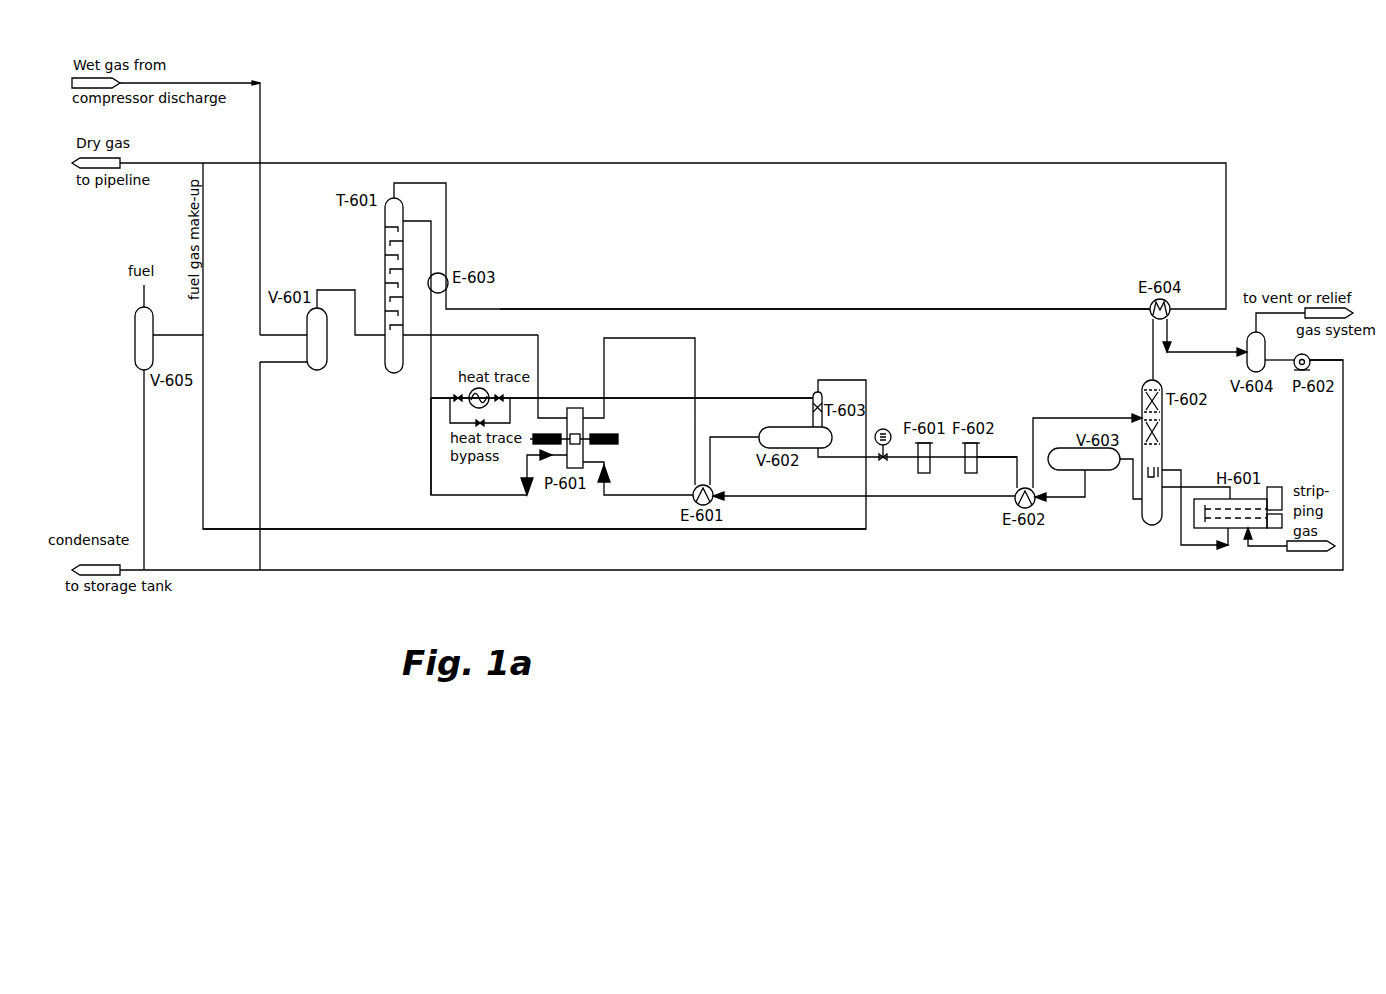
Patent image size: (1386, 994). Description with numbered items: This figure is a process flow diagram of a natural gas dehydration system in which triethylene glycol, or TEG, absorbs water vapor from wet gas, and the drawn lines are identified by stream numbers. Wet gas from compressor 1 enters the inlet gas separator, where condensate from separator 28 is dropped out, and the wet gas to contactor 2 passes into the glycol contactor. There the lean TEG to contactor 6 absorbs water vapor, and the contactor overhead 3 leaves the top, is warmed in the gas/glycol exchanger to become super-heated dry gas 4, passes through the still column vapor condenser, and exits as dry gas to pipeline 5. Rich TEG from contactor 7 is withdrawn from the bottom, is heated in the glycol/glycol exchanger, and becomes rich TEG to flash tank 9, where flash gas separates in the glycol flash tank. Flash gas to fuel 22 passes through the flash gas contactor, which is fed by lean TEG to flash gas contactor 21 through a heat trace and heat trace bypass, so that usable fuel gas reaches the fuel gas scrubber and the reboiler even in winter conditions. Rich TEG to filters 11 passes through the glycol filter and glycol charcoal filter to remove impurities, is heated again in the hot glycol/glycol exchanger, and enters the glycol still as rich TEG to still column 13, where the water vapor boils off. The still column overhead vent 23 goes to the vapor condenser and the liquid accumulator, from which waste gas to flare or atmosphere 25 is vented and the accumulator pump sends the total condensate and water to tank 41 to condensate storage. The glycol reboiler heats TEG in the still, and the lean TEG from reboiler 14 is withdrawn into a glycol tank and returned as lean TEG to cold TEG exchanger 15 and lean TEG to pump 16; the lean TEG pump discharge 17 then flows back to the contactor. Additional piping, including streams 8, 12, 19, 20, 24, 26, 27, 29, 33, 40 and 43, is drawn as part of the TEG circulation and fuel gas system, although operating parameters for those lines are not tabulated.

The wet gas from compressor 1 is at (260, 237).
The wet gas to contactor 2 is at (337, 290).
The contactor overhead 3 is at (446, 212).
The super-heated dry gas 4 is at (512, 308).
The dry gas to pipeline 5 is at (193, 162).
The lean TEG to contactor 6 is at (419, 221).
The rich TEG from contactor 7 is at (510, 329).
The pump discharge line 8 is at (657, 338).
The rich TEG to flash tank 9 is at (710, 467).
The rich TEG to filters 11 is at (832, 457).
The filtered liquid line 12 is at (1000, 457).
The rich TEG to still column 13 is at (1033, 437).
The lean TEG from reboiler 14 is at (1133, 487).
The lean TEG to cold TEG exchanger 15 is at (1000, 497).
The lean TEG to pump 16 is at (665, 495).
The lean TEG pump discharge 17 is at (431, 440).
The T-601 bottoms line 19 is at (431, 315).
The heat traced line 20 is at (440, 397).
The lean TEG to flash gas contactor 21 is at (762, 398).
The flash gas to fuel 22 is at (866, 386).
The still column overhead vent 23 is at (1153, 340).
The E-604 vapor line to V-604 24 is at (1167, 335).
The waste gas to flare or atmosphere 25 is at (1290, 313).
The V-604 liquid line to P-602 26 is at (1282, 360).
The P-602 discharge line 27 is at (1328, 360).
The condensate from separator 28 is at (278, 362).
The fuel line from V-605 29 is at (143, 300).
The fuel gas make-up line 33 is at (203, 305).
The V-605 condensate line 40 is at (144, 432).
The total condensate and water to tank 41 is at (130, 569).
The stripping gas line 43 is at (1268, 555).